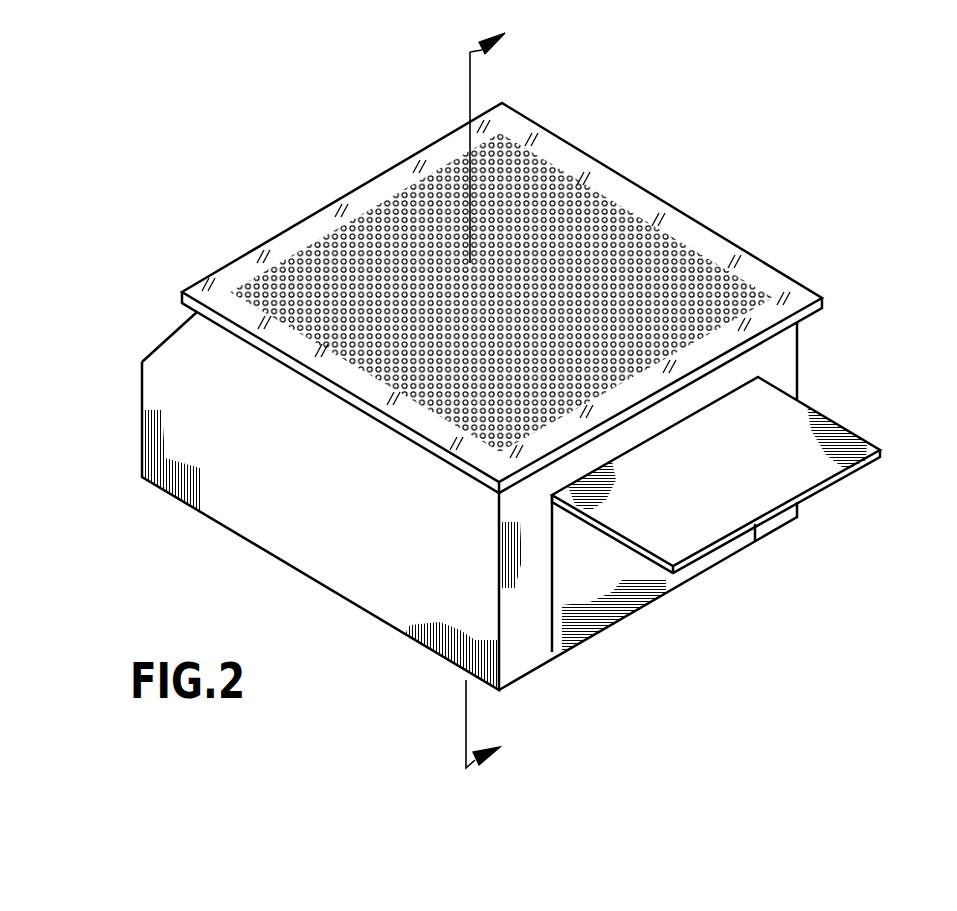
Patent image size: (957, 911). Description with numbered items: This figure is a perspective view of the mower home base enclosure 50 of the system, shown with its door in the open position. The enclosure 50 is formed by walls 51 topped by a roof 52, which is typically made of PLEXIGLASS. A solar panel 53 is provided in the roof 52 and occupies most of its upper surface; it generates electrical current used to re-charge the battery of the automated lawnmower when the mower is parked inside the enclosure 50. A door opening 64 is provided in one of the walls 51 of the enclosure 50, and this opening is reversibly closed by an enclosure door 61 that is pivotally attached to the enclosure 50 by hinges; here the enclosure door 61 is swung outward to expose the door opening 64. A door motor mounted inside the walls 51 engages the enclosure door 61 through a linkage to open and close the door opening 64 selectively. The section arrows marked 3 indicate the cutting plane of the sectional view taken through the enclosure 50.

The mower home base enclosure 50 is at (224, 106).
The walls 51 is at (243, 505).
The roof 52 is at (238, 273).
The solar panel 53 is at (403, 160).
The enclosure door 61 is at (803, 493).
The door opening 64 is at (613, 565).
The section line for FIG. 3 is at (469, 417).